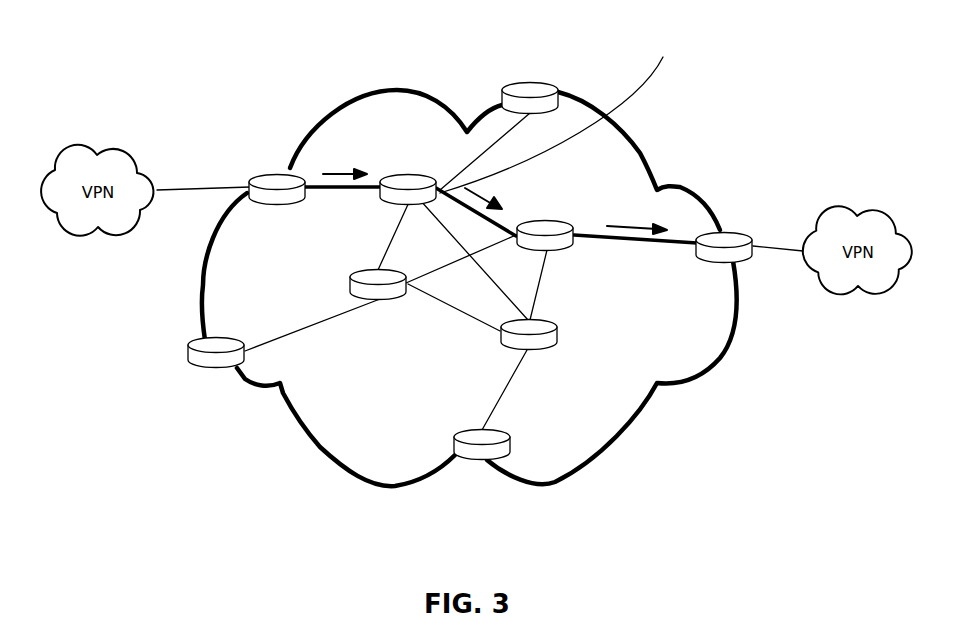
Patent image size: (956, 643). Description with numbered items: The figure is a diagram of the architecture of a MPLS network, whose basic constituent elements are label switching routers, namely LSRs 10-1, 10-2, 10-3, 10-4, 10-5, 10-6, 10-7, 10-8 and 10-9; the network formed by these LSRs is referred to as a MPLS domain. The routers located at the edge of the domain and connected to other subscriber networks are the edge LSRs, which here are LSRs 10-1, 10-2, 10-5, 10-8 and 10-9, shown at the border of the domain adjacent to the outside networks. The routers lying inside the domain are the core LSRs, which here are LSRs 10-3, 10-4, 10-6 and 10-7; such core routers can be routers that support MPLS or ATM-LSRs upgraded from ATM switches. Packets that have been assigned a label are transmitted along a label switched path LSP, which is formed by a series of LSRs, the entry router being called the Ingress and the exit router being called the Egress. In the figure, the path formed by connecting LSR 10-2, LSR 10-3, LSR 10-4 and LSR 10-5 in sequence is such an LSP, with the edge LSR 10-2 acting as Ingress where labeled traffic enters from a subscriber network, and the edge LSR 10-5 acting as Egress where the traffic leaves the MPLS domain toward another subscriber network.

The edge LSR 10-1 is at (534, 83).
The edge LSR 10-2 is at (262, 175).
The core LSR 10-3 is at (400, 175).
The core LSR 10-4 is at (550, 221).
The edge LSR 10-5 is at (737, 233).
The core LSR 10-6 is at (355, 270).
The core LSR 10-7 is at (551, 320).
The edge LSR 10-8 is at (220, 338).
The edge LSR 10-9 is at (469, 430).
The label switched path LSP is at (561, 116).